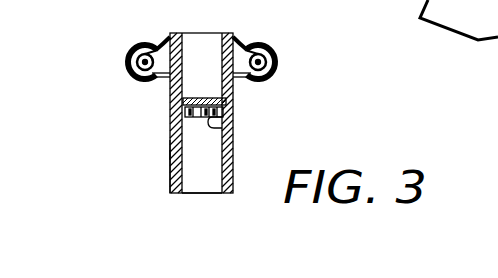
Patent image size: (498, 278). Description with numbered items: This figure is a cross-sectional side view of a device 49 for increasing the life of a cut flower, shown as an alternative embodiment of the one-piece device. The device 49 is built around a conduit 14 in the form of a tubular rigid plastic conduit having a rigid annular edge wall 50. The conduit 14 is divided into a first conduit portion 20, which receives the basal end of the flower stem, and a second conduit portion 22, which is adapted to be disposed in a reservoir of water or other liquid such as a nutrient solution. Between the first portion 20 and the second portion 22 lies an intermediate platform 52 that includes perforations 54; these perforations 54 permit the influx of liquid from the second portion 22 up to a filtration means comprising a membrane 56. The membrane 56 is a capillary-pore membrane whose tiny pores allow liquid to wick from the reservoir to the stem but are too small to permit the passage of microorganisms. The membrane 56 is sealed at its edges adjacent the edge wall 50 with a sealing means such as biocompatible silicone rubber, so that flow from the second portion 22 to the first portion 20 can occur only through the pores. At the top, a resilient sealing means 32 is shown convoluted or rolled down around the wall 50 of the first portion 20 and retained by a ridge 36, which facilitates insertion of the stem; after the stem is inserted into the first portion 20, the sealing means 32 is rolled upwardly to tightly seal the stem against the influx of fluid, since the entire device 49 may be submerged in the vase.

The conduit 14 is at (216, 116).
The first conduit portion 20 is at (213, 50).
The second conduit portion 22 is at (198, 180).
The resilient sealing means 32 is at (279, 56).
The ridge 36 is at (166, 36).
The device 49 is at (132, 150).
The edge wall 50 is at (170, 182).
The intermediate platform 52 is at (182, 112).
The perforations 54 is at (222, 124).
The membrane 56 is at (183, 100).